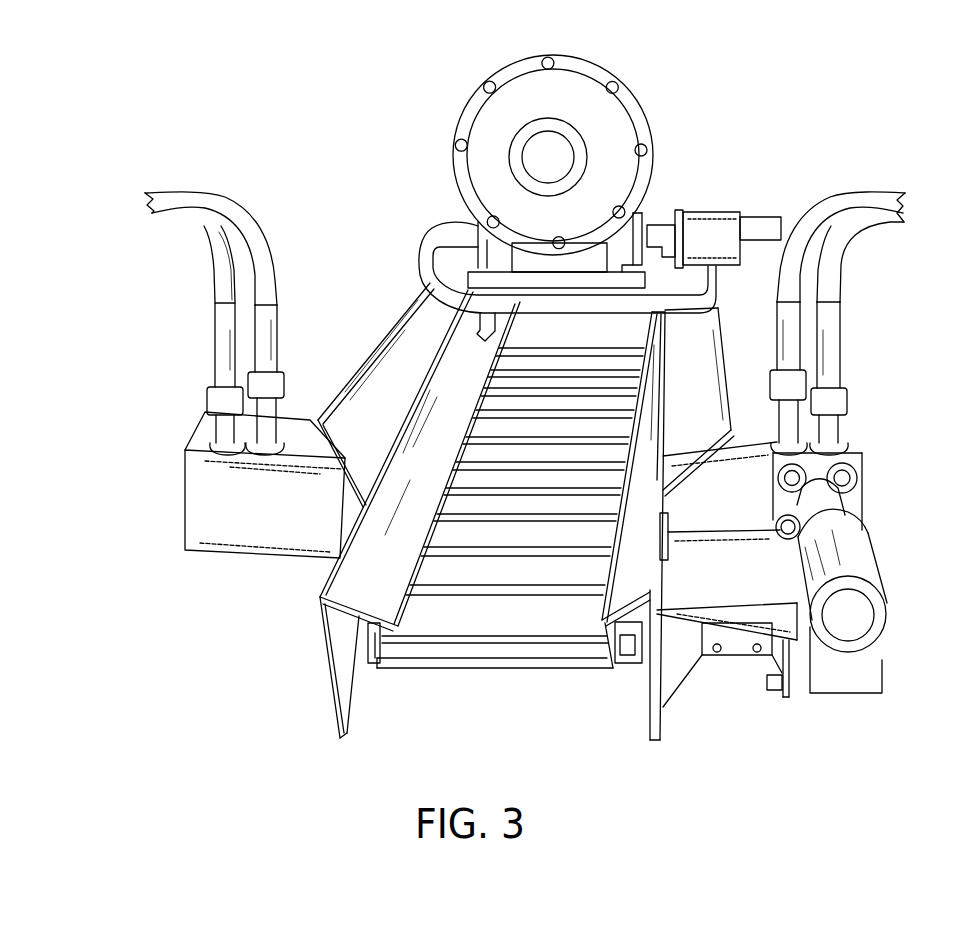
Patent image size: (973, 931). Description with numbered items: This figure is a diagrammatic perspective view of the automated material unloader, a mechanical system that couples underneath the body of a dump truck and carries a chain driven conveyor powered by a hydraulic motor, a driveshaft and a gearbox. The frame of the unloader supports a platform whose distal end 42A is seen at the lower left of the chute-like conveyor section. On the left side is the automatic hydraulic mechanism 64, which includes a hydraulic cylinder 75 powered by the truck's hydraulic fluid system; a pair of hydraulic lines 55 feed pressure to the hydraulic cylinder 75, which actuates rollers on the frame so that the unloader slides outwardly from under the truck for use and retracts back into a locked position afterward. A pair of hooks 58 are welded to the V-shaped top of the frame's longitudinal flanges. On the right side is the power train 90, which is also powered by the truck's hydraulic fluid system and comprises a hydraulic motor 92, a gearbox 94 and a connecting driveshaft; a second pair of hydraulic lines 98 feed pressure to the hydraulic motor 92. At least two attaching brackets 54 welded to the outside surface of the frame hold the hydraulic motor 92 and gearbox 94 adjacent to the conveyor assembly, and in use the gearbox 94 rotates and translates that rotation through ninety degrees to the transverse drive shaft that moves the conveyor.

The distal end 42A is at (416, 690).
The attaching brackets 54 is at (753, 615).
The hydraulic lines 55 is at (262, 233).
The hooks 58 is at (632, 567).
The automatic hydraulic mechanism 64 is at (141, 380).
The hydraulic cylinder 75 is at (185, 450).
The power train 90 is at (894, 575).
The hydraulic motor 92 is at (857, 457).
The gearbox 94 is at (853, 638).
The hydraulic lines 98 is at (802, 238).